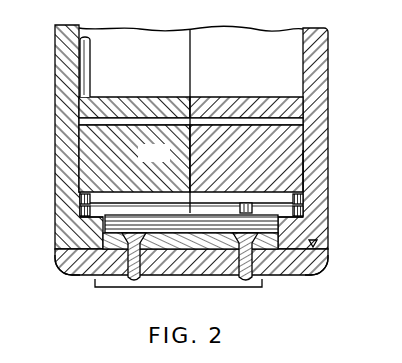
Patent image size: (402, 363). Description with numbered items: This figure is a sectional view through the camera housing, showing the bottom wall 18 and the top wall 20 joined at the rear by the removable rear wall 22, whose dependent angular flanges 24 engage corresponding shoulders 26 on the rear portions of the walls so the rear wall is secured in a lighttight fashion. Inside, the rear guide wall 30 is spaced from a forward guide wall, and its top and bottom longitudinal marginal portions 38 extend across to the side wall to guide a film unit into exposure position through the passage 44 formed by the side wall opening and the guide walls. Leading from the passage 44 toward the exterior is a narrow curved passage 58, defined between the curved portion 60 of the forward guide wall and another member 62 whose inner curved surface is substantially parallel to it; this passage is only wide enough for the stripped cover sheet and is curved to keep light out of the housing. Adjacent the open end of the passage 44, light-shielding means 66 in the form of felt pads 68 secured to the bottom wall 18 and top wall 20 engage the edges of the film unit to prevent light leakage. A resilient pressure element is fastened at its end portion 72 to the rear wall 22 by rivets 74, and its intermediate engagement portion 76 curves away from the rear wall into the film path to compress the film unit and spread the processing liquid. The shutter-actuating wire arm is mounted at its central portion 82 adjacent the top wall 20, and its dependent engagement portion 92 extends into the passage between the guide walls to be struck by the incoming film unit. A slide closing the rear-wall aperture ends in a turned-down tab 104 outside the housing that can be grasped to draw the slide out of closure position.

The bottom wall 18 is at (325, 38).
The top wall 20 is at (62, 38).
The rear wall 22 is at (75, 278).
The angular flanges 24 is at (320, 243).
The shoulders 26 is at (327, 264).
The guide wall 30 is at (305, 250).
The longitudinal marginal portions 38 is at (93, 225).
The passage 44 is at (303, 176).
The curved passage 58 is at (232, 122).
The curved portion 60 is at (180, 97).
The member 62 is at (163, 161).
The channel 66 is at (117, 178).
The felt pads 68 is at (85, 196).
The end portion 72 is at (188, 240).
The rivets 74 is at (247, 278).
The engagement portion 76 is at (205, 215).
The central portion 82 is at (93, 50).
The engagement portion 92 is at (262, 203).
The tab 104 is at (132, 284).